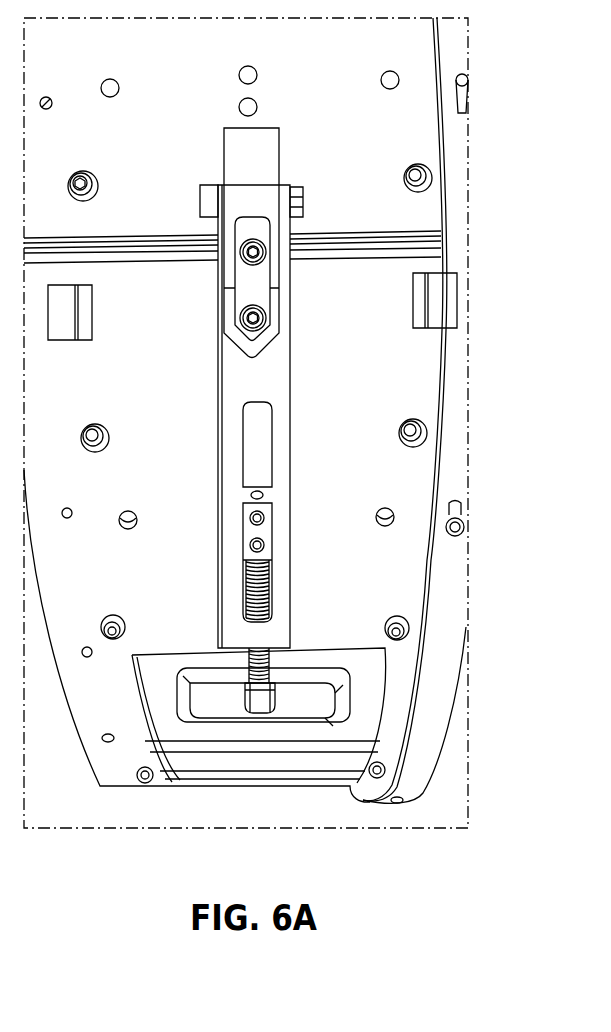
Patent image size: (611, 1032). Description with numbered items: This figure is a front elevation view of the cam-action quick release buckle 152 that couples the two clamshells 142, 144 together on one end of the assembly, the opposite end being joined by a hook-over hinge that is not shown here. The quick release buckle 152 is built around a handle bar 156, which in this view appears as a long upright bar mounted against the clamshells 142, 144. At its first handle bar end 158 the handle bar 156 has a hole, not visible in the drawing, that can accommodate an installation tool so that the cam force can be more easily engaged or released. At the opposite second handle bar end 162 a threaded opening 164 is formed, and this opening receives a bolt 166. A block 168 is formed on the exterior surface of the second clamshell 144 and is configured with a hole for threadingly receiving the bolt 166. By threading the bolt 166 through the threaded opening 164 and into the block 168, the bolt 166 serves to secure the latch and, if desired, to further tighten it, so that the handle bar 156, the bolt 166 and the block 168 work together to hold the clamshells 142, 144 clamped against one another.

The clamshell 142 is at (372, 148).
The second clamshell 144 is at (383, 337).
The quick release buckle 152 is at (312, 125).
The handle bar 156 is at (290, 368).
The first handle bar end 158 is at (258, 134).
The second handle bar end 162 is at (298, 641).
The threaded opening 164 is at (272, 618).
The bolt 166 is at (283, 687).
The block 168 is at (272, 530).